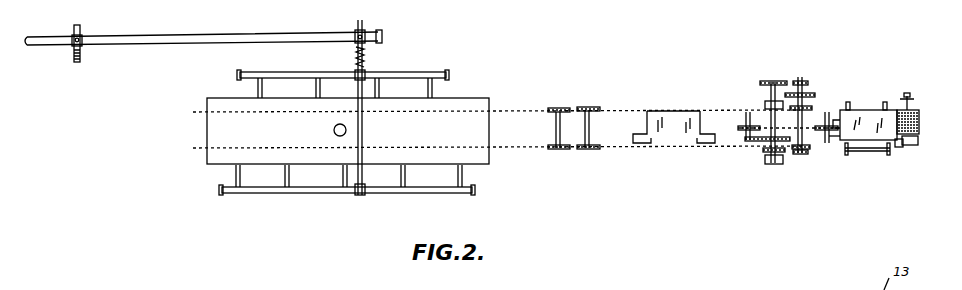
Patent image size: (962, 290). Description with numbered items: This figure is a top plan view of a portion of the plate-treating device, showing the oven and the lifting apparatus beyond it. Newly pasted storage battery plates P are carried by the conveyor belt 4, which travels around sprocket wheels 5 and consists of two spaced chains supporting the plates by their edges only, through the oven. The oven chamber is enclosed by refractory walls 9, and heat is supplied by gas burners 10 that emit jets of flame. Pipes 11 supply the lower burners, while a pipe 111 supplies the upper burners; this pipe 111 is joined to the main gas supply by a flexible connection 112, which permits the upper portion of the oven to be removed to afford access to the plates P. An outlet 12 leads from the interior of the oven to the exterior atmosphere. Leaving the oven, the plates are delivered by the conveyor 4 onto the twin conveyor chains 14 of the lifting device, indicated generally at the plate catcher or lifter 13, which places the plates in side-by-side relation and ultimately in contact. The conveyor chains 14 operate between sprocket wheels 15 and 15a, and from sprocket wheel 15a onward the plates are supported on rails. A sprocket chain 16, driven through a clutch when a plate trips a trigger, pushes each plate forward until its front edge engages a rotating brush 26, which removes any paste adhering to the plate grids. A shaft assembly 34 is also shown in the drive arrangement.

The pipe 11 is at (203, 34).
The flexible connection 112 is at (84, 55).
The pipe 111 is at (303, 69).
The gas burner 10 is at (317, 90).
The refractory wall 9 is at (470, 100).
The outlet 12 is at (333, 130).
The conveyor belt 4 is at (513, 110).
The sprocket wheel 5 is at (558, 150).
The sprocket wheel 15 is at (586, 108).
The twin conveyor chain 14 is at (611, 108).
The storage battery plate P is at (673, 110).
The gear shaft 34 is at (775, 82).
The sprocket chain 16 is at (808, 130).
The sprocket wheel 15a is at (810, 108).
The plate catcher or lifter 13 is at (869, 101).
The brush 26 is at (918, 126).